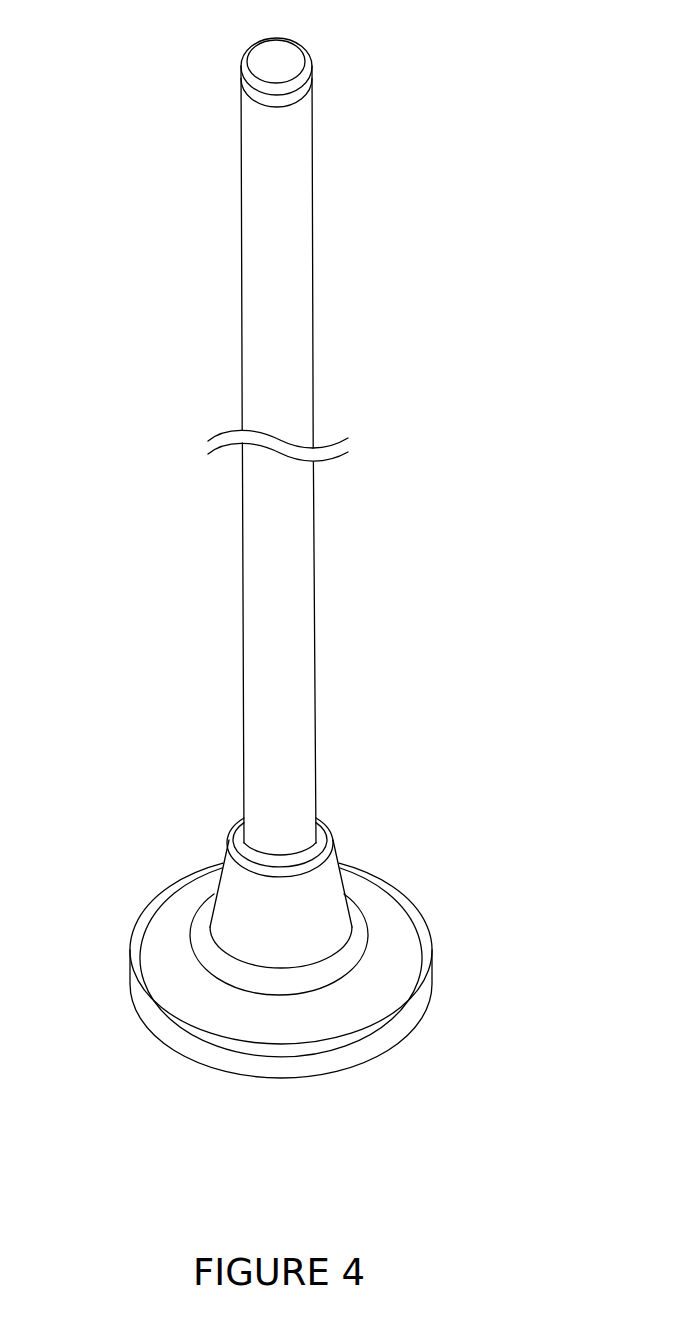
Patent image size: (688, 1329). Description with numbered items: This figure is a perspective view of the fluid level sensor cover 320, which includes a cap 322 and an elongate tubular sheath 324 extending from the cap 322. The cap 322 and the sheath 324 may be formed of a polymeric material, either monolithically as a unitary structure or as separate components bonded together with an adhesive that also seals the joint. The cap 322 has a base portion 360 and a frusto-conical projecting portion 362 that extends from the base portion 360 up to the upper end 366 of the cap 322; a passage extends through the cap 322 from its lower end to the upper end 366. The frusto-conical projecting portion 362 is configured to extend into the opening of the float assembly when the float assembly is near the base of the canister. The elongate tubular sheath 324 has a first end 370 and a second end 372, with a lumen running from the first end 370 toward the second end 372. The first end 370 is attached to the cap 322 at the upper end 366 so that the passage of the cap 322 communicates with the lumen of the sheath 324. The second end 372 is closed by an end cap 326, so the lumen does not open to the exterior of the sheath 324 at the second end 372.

The fluid level sensor cover 320 is at (388, 597).
The cap 322 is at (160, 925).
The elongate tubular sheath 324 is at (295, 323).
The end cap 326 is at (287, 57).
The base portion 360 is at (403, 955).
The frusto-conical projecting portion 362 is at (327, 883).
The upper end 366 is at (238, 832).
The first end 370 is at (358, 788).
The second end 372 is at (216, 62).